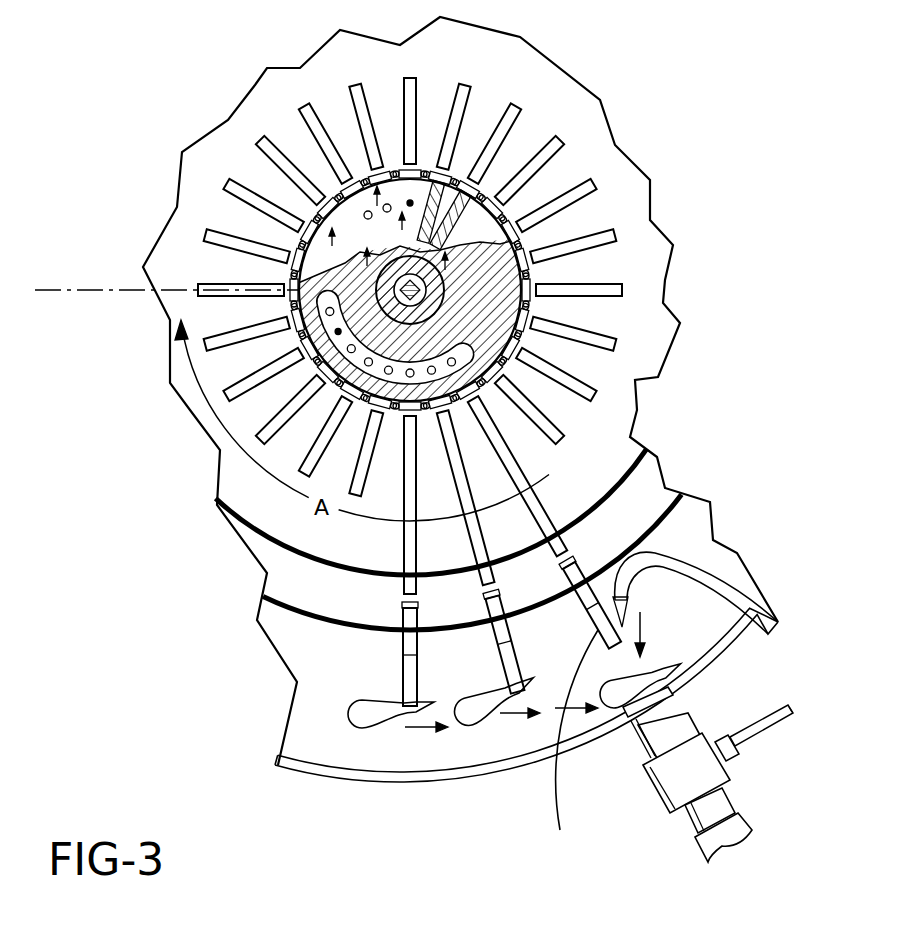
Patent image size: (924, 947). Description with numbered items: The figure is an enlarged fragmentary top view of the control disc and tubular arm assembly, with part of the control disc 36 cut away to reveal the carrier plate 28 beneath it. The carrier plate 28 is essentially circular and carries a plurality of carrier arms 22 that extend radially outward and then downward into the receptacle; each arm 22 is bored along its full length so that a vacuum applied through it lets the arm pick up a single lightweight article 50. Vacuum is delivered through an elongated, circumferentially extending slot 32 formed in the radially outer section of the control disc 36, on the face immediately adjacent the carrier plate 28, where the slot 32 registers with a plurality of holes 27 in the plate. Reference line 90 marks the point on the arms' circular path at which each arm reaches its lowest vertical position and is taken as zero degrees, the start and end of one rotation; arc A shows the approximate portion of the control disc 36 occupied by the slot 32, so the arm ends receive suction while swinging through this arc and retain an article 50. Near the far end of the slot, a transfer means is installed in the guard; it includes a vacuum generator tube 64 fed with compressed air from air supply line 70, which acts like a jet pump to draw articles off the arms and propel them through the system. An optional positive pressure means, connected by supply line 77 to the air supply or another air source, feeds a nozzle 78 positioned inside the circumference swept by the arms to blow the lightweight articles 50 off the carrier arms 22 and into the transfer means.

The carrier arms 22 is at (573, 749).
The holes 27 is at (441, 174).
The carrier plate 28 is at (400, 195).
The slot 32 is at (345, 330).
The control disc 36 is at (333, 267).
The lightweight article 50 is at (360, 714).
The vacuum generator tube 64 is at (697, 703).
The air supply line 70 is at (778, 718).
The supply line 77 is at (722, 598).
The nozzle 78 is at (712, 545).
The reference line 90 is at (107, 290).